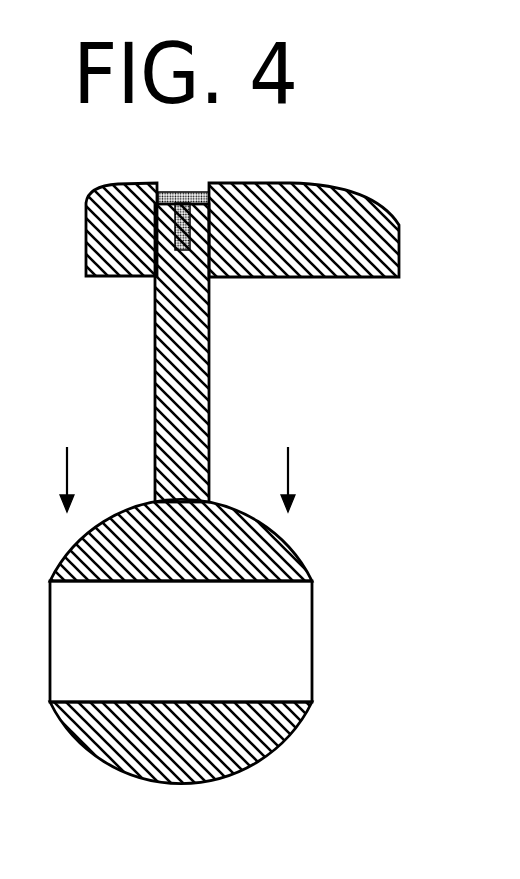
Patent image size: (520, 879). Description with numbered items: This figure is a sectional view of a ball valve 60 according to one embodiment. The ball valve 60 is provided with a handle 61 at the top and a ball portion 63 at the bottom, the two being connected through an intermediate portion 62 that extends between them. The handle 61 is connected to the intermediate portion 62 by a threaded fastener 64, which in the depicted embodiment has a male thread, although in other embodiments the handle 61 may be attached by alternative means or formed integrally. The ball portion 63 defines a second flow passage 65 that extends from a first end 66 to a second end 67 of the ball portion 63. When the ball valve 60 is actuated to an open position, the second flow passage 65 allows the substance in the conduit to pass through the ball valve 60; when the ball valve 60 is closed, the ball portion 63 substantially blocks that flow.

The ball valve 60 is at (266, 481).
The handle 61 is at (370, 240).
The intermediate portion 62 is at (155, 332).
The ball portion 63 is at (222, 661).
The threaded fastener 64 is at (183, 195).
The second flow passage 65 is at (288, 639).
The first end 66 is at (67, 465).
The second end 67 is at (287, 465).